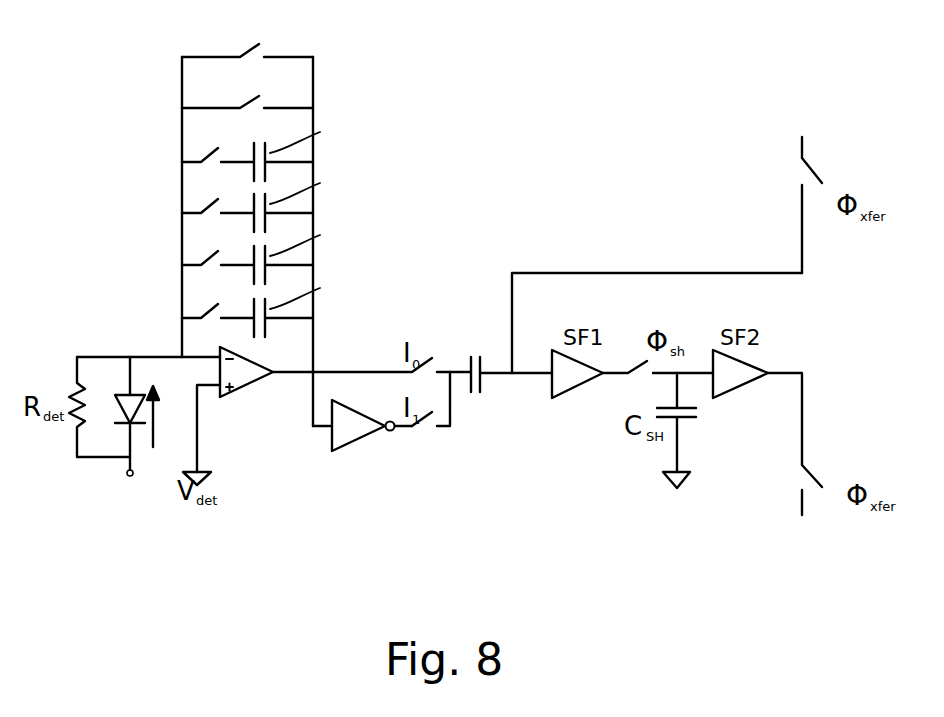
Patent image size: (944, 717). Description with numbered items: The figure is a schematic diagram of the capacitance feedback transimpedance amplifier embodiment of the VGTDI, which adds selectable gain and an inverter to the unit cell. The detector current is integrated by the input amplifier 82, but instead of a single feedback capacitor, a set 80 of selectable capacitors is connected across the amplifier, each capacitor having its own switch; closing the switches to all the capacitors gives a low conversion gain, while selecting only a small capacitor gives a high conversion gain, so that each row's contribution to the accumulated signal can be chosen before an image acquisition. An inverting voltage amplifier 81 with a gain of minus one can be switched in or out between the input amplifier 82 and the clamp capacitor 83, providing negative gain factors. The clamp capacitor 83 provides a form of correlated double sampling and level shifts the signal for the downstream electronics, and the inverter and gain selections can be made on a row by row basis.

The set of selectable capacitors 80 is at (127, 118).
The inverting voltage amplifier 81 is at (370, 445).
The input amplifier 82 is at (245, 393).
The clamp capacitor 83 is at (487, 415).